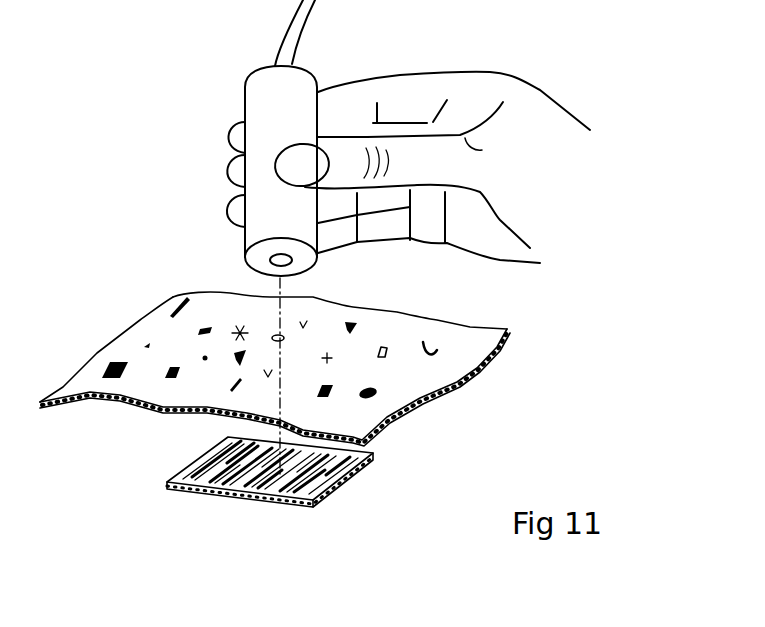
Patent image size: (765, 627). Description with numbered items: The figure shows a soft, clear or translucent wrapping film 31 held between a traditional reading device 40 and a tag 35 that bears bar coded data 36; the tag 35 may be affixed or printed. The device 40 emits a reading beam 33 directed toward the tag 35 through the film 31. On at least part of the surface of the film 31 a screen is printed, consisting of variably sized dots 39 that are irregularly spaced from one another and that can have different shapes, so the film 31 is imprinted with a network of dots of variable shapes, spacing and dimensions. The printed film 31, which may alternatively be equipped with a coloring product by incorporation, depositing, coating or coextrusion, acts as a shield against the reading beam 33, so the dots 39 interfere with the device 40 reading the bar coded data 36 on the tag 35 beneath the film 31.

The wrapping film 31 is at (497, 310).
The reading beam 33 is at (282, 317).
The tag 35 is at (182, 492).
The bar coded data 36 is at (290, 502).
The dots 39 is at (377, 393).
The traditional device 40 is at (305, 125).